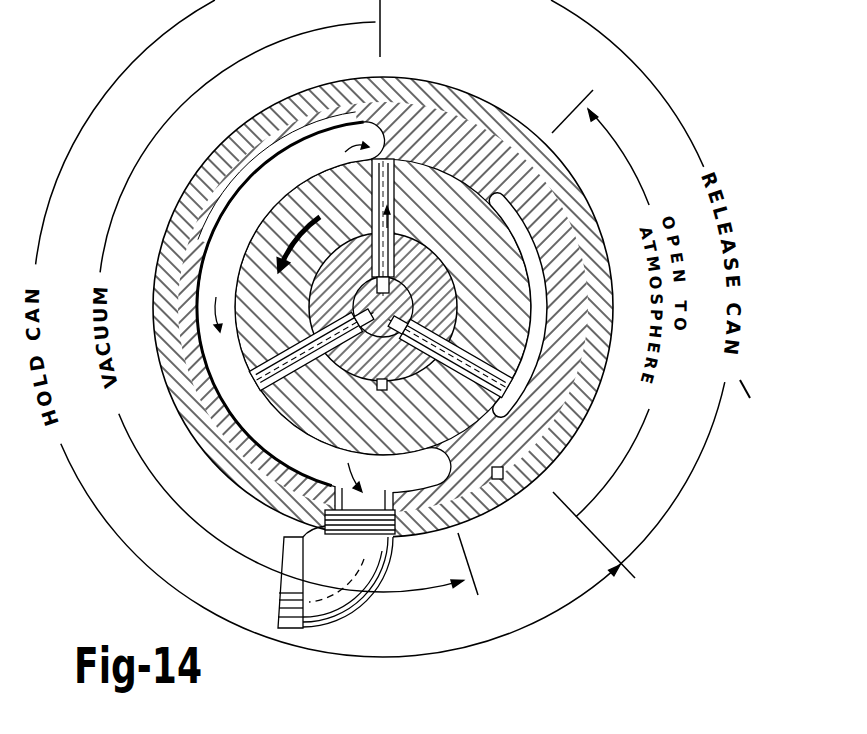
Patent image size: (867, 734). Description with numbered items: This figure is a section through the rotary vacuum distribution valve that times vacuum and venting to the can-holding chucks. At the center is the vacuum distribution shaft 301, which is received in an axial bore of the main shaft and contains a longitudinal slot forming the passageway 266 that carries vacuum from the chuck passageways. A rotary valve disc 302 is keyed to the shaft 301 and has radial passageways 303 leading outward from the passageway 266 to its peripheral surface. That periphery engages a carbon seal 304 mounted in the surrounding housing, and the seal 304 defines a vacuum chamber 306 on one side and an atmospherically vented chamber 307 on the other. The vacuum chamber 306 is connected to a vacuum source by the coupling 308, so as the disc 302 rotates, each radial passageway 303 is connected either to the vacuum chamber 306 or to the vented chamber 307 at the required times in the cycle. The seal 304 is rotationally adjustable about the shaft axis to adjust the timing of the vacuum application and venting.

The passageway 266 is at (425, 296).
The vacuum distribution shaft 301 is at (362, 300).
The rotary valve disc 302 is at (235, 268).
The radial passageways 303 is at (372, 184).
The carbon seal 304 is at (460, 127).
The vacuum chamber 306 is at (226, 215).
The atmospherically vented chamber 307 is at (508, 403).
The coupling 308 is at (351, 612).